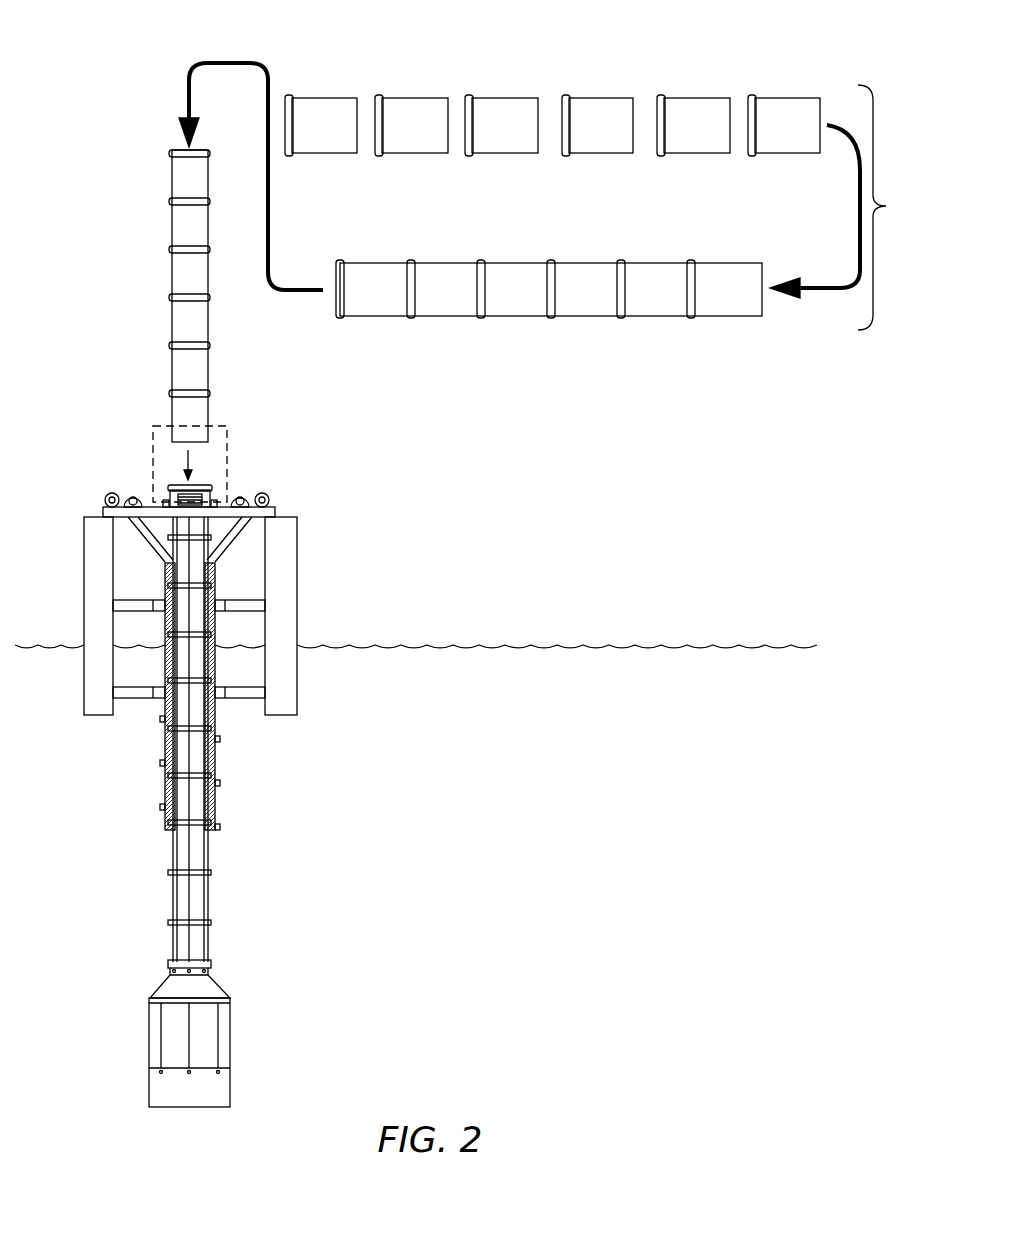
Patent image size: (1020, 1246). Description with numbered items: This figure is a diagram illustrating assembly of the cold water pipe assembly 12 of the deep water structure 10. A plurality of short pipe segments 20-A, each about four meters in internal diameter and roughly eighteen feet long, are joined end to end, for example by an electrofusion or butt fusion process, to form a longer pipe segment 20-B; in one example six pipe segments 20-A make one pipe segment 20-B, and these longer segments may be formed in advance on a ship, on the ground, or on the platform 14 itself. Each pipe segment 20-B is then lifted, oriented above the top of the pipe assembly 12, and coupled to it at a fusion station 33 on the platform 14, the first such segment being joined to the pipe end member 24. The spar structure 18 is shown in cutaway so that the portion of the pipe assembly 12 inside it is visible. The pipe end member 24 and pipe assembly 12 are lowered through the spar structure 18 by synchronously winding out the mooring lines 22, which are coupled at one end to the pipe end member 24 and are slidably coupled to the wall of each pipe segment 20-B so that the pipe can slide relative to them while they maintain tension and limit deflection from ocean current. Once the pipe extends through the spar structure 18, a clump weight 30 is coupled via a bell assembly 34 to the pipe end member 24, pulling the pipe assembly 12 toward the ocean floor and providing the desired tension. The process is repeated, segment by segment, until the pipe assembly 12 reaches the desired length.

The deep water structure 10 is at (282, 468).
The pipe assembly 12 is at (207, 523).
The platform 14 is at (103, 512).
The spar structure 18 is at (165, 745).
The pipe segments 20-A is at (515, 98).
The pipe segment 20-B is at (158, 440).
The mooring lines 22 is at (152, 532).
The pipe end member 24 is at (210, 965).
The clump weight 30 is at (179, 1097).
The fusion station 33 is at (228, 440).
The bell assembly 34 is at (135, 980).